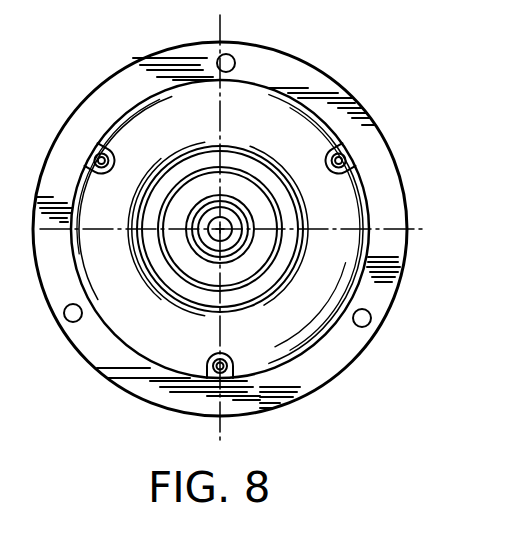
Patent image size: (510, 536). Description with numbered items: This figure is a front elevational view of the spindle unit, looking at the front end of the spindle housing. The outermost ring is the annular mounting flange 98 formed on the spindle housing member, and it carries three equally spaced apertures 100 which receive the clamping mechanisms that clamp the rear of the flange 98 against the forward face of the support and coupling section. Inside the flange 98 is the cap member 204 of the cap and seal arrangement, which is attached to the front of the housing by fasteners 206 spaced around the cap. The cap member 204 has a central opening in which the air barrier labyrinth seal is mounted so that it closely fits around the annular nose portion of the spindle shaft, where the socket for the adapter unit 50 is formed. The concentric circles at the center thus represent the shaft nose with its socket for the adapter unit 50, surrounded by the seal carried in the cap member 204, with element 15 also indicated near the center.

The shaft 15 is at (228, 226).
The adapter unit 50 is at (258, 234).
The annular mounting flange 98 is at (355, 110).
The apertures 100 is at (231, 56).
The cap member 204 is at (348, 215).
The fasteners 206 is at (97, 147).